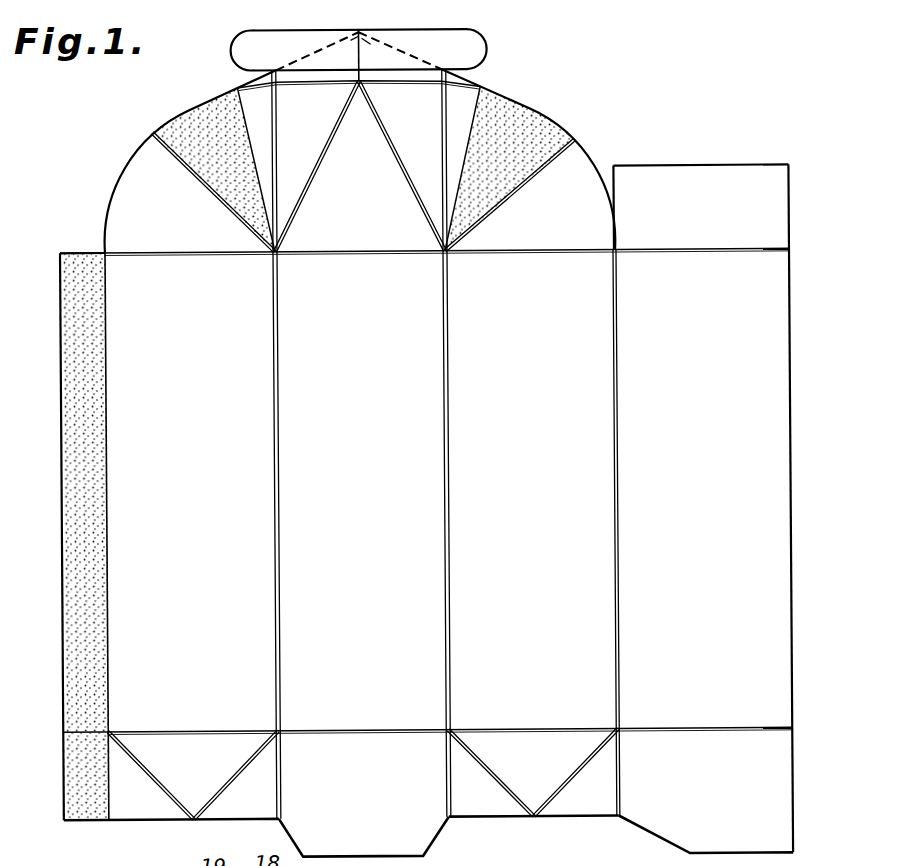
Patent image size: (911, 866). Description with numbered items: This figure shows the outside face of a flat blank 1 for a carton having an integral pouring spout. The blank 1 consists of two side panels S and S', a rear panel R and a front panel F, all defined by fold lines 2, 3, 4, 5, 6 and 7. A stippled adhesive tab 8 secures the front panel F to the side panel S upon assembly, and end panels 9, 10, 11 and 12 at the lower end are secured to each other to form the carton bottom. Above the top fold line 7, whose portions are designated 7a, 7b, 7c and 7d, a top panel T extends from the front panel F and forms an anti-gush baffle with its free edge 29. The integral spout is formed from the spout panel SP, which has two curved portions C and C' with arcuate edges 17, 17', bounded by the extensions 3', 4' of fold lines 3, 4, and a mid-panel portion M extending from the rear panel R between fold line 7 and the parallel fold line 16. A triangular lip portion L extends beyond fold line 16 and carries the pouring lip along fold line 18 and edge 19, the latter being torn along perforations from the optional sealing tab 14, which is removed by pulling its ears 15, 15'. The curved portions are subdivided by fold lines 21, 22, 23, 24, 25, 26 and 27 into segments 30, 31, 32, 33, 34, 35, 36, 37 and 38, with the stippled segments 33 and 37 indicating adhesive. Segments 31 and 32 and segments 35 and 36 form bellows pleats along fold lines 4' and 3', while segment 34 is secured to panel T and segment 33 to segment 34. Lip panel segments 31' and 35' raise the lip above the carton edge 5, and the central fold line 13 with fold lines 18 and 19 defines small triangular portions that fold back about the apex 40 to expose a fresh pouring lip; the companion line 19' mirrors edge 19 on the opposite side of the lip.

The blank 1 is at (796, 460).
The fold line 2 is at (106, 358).
The vertical fold line 3 is at (249, 444).
The extension of vertical fold line 3' is at (284, 169).
The vertical fold line 4 is at (421, 443).
The extension of vertical fold line 4' is at (428, 155).
The fold line 5 is at (617, 362).
The fold line 6 is at (661, 731).
The top fold line 7 is at (770, 252).
The fold line 7a is at (656, 257).
The fold line 7b is at (546, 256).
The fold line 7c is at (346, 256).
The fold line 7d is at (216, 256).
The tab 8 is at (68, 523).
The end panel 9 is at (190, 822).
The bottom panel 10 is at (440, 832).
The end panel 11 is at (535, 820).
The end panel 12 is at (770, 785).
The fold line 13 is at (384, 45).
The sealing tab 14 is at (472, 30).
The end portion 15 is at (499, 48).
The end portion 15' is at (220, 38).
The fold line 16 is at (382, 87).
The arcuate edge 17 is at (548, 159).
The arcuate edge 17' is at (170, 161).
The fold line 18 is at (350, 45).
The edge 19 is at (306, 36).
The score line 19' is at (412, 35).
The fold line 21 is at (165, 151).
The fold line 22 is at (240, 118).
The fold line 23 is at (334, 131).
The fold line 24 is at (364, 68).
The fold line 25 is at (382, 123).
The fold line 26 is at (478, 121).
The fold line 27 is at (568, 148).
The edge 29 is at (719, 168).
The cantilever segment 30 is at (359, 166).
The segment 31 is at (401, 166).
The lip panel segment 31' is at (404, 68).
The segment 32 is at (463, 165).
The segment 33 is at (509, 168).
The segment 34 is at (529, 195).
The segment 35 is at (318, 166).
The lip panel segment 35' is at (309, 70).
The segment 36 is at (256, 167).
The segment 37 is at (213, 170).
The segment 38 is at (189, 192).
The apex 40 is at (363, 38).
The side panel S is at (191, 493).
The rear panel R is at (361, 492).
The side panel S' is at (531, 491).
The front panel F is at (704, 489).
The top panel T is at (701, 206).
The curved portion C is at (575, 202).
The curved portion C' is at (187, 214).
The mid-panel portion M is at (354, 172).
The triangular lip portion L is at (339, 66).
The spout panel SP is at (550, 100).